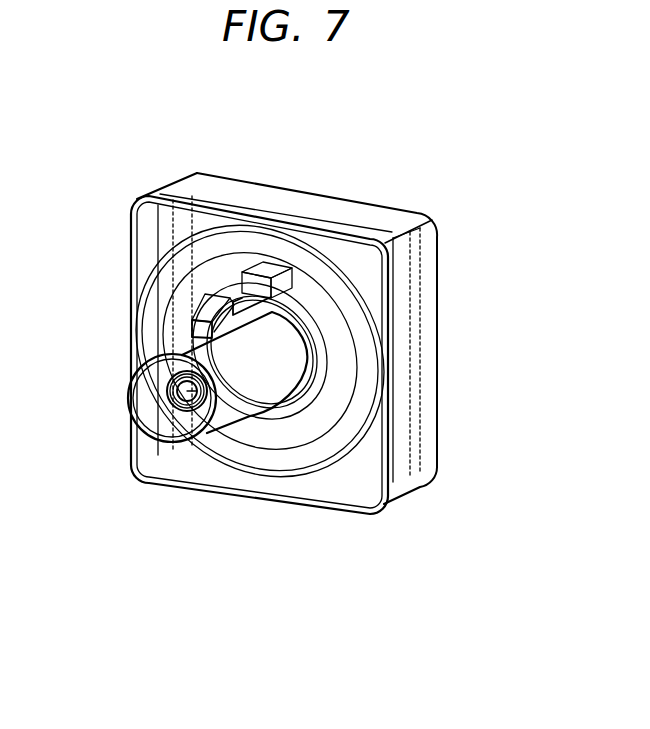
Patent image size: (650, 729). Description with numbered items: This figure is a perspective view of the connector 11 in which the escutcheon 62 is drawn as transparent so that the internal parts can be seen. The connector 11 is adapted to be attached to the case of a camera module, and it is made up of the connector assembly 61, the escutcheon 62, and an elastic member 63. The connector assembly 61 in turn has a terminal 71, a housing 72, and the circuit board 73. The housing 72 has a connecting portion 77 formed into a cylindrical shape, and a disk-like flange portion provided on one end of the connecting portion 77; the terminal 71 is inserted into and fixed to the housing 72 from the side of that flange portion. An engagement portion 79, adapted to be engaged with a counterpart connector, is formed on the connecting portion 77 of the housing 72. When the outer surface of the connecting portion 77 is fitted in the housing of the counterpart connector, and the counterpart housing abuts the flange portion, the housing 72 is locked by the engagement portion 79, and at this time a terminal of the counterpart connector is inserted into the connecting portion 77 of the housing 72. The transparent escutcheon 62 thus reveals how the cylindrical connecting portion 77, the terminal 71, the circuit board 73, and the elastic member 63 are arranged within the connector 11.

The connector 11 is at (150, 170).
The connector assembly 61 is at (331, 475).
The escutcheon 62 is at (245, 507).
The elastic member 63 is at (322, 247).
The terminal 71 is at (172, 418).
The housing 72 is at (272, 424).
The circuit board 73 is at (402, 472).
The connecting portion 77 is at (214, 443).
The engagement portion 79 is at (208, 308).